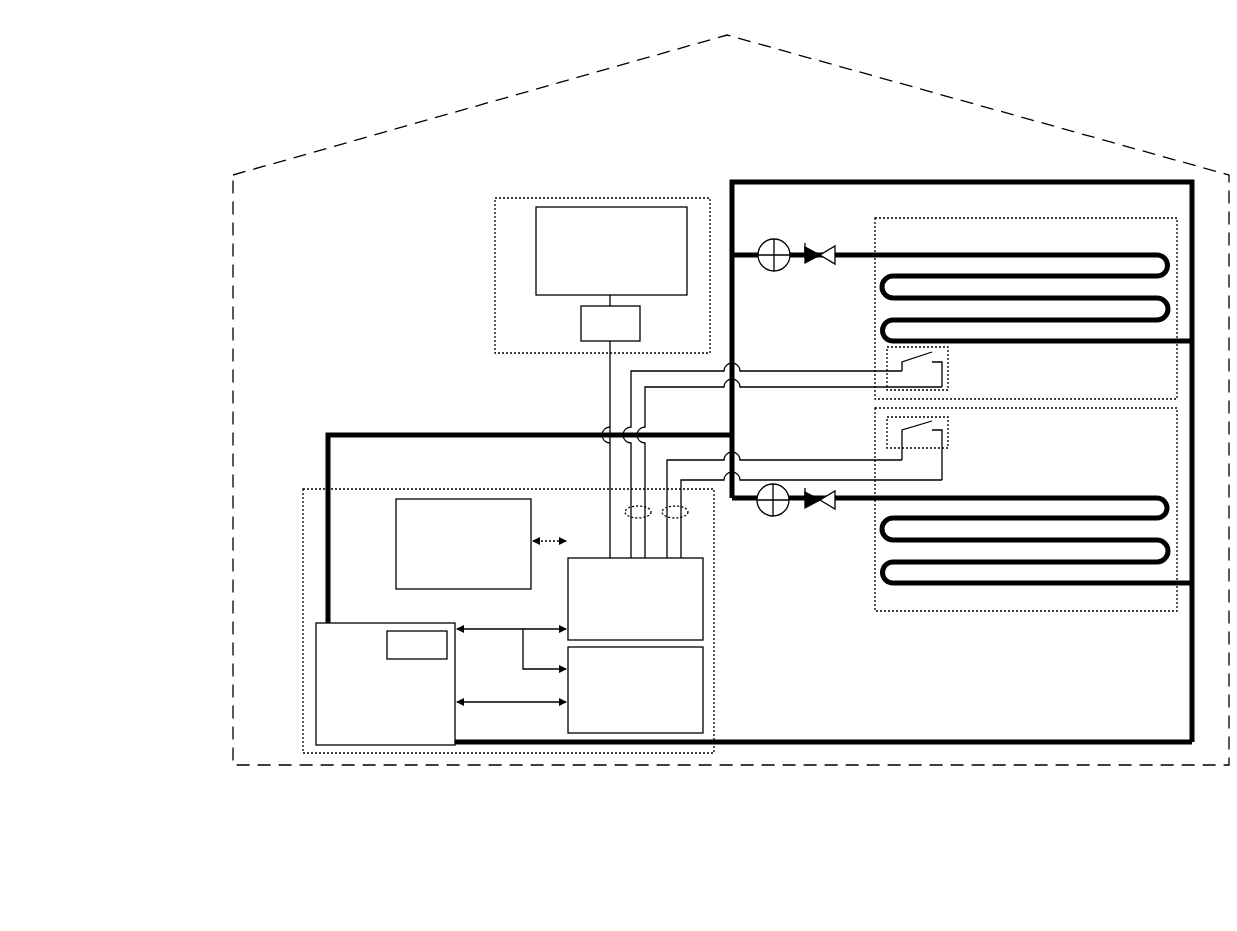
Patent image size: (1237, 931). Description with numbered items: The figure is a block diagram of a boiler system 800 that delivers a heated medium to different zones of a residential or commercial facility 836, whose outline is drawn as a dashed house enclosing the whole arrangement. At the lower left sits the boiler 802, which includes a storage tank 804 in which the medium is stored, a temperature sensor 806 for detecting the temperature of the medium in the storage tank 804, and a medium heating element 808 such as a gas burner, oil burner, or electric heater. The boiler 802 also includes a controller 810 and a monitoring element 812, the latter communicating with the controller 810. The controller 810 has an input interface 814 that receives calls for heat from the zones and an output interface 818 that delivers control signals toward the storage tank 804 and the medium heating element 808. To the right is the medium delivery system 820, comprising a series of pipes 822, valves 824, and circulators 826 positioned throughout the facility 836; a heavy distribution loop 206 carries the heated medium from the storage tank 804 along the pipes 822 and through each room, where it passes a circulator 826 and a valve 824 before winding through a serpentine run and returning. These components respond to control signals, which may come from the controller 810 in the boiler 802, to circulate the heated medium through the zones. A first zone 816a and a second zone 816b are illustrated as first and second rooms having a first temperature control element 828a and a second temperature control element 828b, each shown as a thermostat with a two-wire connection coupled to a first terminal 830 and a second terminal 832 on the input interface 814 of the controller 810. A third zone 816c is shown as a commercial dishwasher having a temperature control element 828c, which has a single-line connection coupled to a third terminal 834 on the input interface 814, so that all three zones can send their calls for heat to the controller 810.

The boiler system 800 is at (255, 58).
The facility 836 is at (232, 228).
The boiler 802 is at (302, 622).
The storage tank 804 is at (385, 684).
The temperature sensor 806 is at (417, 645).
The medium heating element 808 is at (635, 690).
The controller 810 is at (635, 599).
The monitoring element 812 is at (463, 544).
The input interface 814 is at (697, 545).
The output interface 818 is at (558, 613).
The medium delivery system 820 is at (720, 138).
The distribution manifold 206 is at (810, 181).
The pipes 822 is at (363, 433).
The valves 824 is at (818, 268).
The circulators 826 is at (777, 240).
The first temperature control element 828a is at (952, 433).
The second temperature control element 828b is at (952, 366).
The temperature control element 828c is at (642, 325).
The first terminal 830 is at (680, 505).
The second terminal 832 is at (640, 506).
The third terminal 834 is at (608, 483).
The first zone 816a is at (995, 613).
The second zone 816b is at (997, 217).
The third zone 816c is at (602, 259).